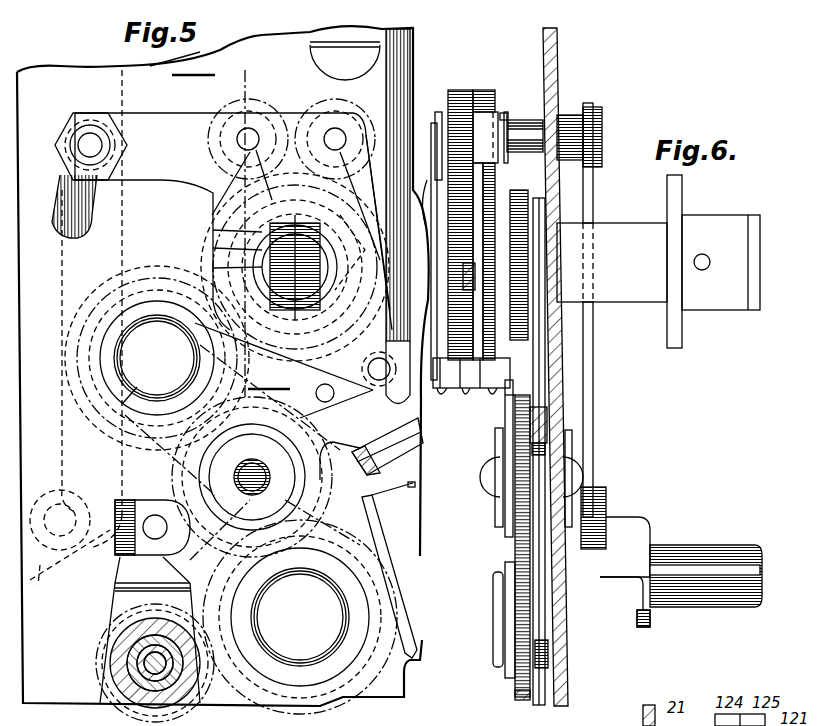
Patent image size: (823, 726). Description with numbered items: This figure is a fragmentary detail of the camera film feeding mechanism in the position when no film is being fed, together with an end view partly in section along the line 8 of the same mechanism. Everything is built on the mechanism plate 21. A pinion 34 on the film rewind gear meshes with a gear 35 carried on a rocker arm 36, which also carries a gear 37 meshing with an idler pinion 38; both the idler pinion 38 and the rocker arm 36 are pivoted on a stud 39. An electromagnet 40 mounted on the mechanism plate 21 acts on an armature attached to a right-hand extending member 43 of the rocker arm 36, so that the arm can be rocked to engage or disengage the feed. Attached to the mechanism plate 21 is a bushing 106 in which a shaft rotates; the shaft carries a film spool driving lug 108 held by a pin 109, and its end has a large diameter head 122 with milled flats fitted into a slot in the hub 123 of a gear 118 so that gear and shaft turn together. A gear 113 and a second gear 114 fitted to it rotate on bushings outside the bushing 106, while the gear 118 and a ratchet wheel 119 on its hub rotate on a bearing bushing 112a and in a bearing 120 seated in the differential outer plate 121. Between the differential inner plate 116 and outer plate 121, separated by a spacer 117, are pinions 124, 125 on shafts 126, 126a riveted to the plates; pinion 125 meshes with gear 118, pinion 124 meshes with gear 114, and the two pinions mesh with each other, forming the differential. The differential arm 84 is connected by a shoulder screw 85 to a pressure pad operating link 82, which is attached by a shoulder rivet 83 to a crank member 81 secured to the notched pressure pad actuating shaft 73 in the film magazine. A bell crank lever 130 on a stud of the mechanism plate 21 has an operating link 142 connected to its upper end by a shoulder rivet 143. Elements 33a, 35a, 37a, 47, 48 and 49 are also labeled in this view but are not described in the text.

In FIG. 5, the section line 8- 8 is at (222, 235).
In FIG. 5, the mechanism plate 21 is at (189, 67).
In FIG. 6, the mechanism plate 21 is at (556, 72).
In FIG. 5, the shaft 33a is at (128, 668).
In FIG. 5, the pinion 34 is at (97, 645).
In FIG. 6, the gear 35 is at (523, 700).
In FIG. 5, the gear 35a is at (270, 645).
In FIG. 6, the gear 35a is at (495, 636).
In FIG. 5, the rocker arm 36 is at (175, 440).
In FIG. 6, the rocker arm 36 is at (545, 386).
In FIG. 5, the gear 37 is at (103, 312).
In FIG. 5, the gear flange 37a is at (137, 387).
In FIG. 5, the idler pinion 38 is at (215, 545).
In FIG. 6, the idler pinion 38 is at (515, 549).
In FIG. 5, the stud 39 is at (252, 480).
In FIG. 6, the stud 39 is at (490, 488).
In FIG. 5, the electromagnet 40 is at (410, 548).
In FIG. 6, the right-hand extending member 43 is at (547, 422).
In FIG. 5, the bar 47 is at (408, 66).
In FIG. 5, the boss 48 is at (348, 32).
In FIG. 5, the pin 49 is at (350, 250).
In FIG. 6, the pin 49 is at (475, 276).
In FIG. 6, the pressure pad actuating shaft 73 is at (715, 552).
In FIG. 5, the crank member 81 is at (70, 568).
In FIG. 6, the crank member 81 is at (640, 528).
In FIG. 5, the pressure pad operating link 82 is at (63, 196).
In FIG. 6, the pressure pad operating link 82 is at (590, 190).
In FIG. 5, the shoulder rivet 83 is at (72, 513).
In FIG. 6, the shoulder rivet 83 is at (606, 505).
In FIG. 5, the differential arm 84 is at (163, 176).
In FIG. 5, the shoulder screw 85 is at (90, 140).
In FIG. 6, the shoulder screw 85 is at (603, 122).
In FIG. 5, the bushing 106 is at (322, 285).
In FIG. 6, the bushing 106 is at (567, 298).
In FIG. 6, the film spool driving lug 108 is at (715, 312).
In FIG. 6, the pin 109 is at (702, 254).
In FIG. 5, the bearing bushing 112a is at (213, 268).
In FIG. 6, the gear 113 is at (520, 192).
In FIG. 6, the second gear 114 is at (520, 420).
In FIG. 5, the differential inner plate 116 is at (222, 203).
In FIG. 6, the differential inner plate 116 is at (505, 112).
In FIG. 5, the spacer 117 is at (378, 378).
In FIG. 6, the spacer 117 is at (440, 390).
In FIG. 6, the gear 118 is at (485, 395).
In FIG. 5, the ratchet wheel 119 is at (380, 215).
In FIG. 6, the ratchet wheel 119 is at (465, 388).
In FIG. 5, the bearing 120 is at (213, 231).
In FIG. 5, the differential outer plate 121 is at (220, 168).
In FIG. 5, the large diameter head 122 is at (303, 307).
In FIG. 5, the hub 123 is at (213, 248).
In FIG. 5, the pinion 124 is at (262, 98).
In FIG. 6, the pinion 124 is at (488, 92).
In FIG. 5, the pinion 125 is at (308, 102).
In FIG. 6, the pinion 125 is at (458, 92).
In FIG. 5, the shaft 126 is at (240, 138).
In FIG. 5, the shaft 126a is at (335, 150).
In FIG. 5, the bell crank lever 130 is at (120, 600).
In FIG. 5, the operating link 142 is at (118, 540).
In FIG. 5, the shoulder rivet 143 is at (155, 540).